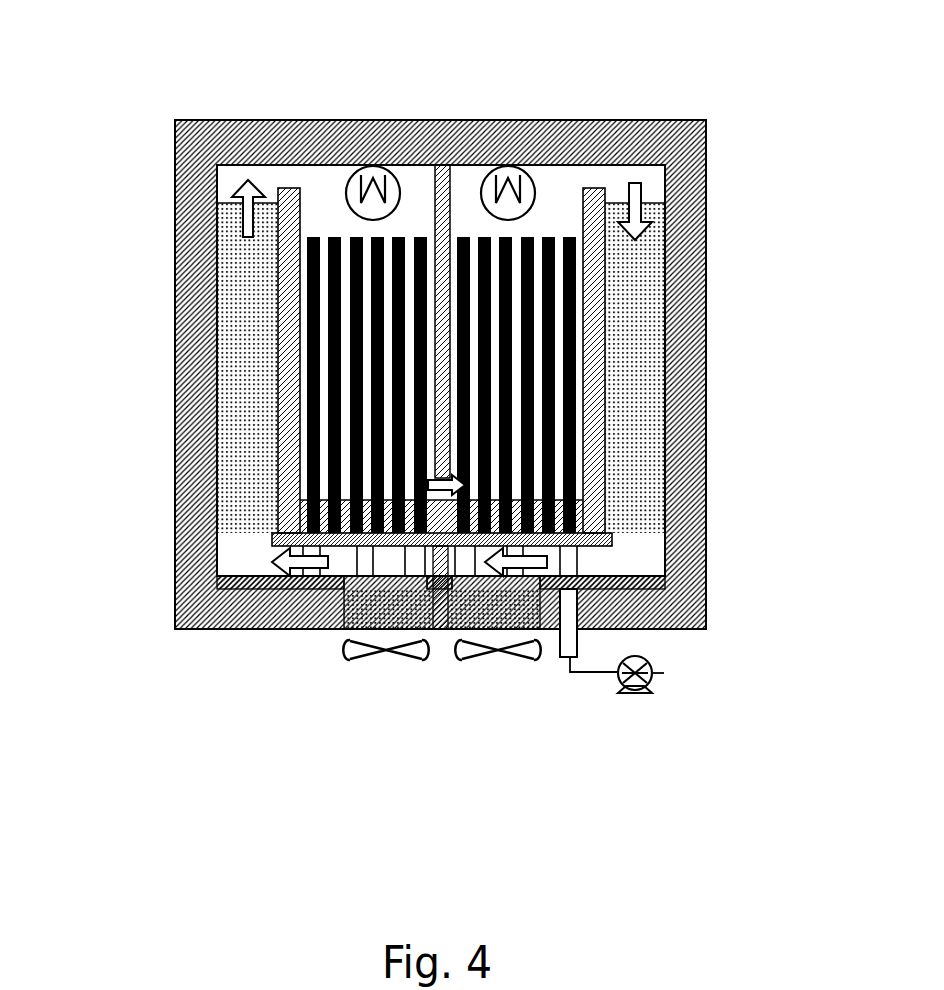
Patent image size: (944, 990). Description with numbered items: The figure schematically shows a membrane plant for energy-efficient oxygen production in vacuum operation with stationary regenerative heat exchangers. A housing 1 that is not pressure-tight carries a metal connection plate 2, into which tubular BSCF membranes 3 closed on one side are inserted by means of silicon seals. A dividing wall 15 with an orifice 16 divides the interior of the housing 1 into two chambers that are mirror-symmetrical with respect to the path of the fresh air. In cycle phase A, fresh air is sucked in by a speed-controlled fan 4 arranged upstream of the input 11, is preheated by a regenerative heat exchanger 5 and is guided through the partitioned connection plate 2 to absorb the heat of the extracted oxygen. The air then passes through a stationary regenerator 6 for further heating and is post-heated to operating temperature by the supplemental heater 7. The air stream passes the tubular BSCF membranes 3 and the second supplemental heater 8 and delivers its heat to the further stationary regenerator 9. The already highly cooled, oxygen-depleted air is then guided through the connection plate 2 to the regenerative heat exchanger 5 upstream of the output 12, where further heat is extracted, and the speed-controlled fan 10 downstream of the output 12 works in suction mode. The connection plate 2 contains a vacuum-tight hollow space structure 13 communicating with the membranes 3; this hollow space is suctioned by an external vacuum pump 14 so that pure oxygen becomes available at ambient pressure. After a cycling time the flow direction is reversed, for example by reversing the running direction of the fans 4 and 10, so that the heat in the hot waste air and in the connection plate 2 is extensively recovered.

The housing 1 is at (683, 337).
The metal connection plate 2 is at (612, 540).
The tubular BSCF membranes 3 is at (372, 283).
The speed-controlled fan 4 is at (412, 650).
The regenerative heat exchanger 5 is at (470, 617).
The stationary regenerator 6 is at (255, 458).
The supplemental heater 7 is at (375, 168).
The second supplemental heater 8 is at (504, 168).
The further stationary regenerator 9 is at (632, 302).
The speed-controlled fan 10 is at (520, 650).
The input 11 is at (348, 630).
The output 12 is at (460, 630).
The hollow space structure 13 is at (568, 560).
The external vacuum pump 14 is at (652, 680).
The dividing wall 15 is at (443, 170).
The orifice 16 is at (320, 519).